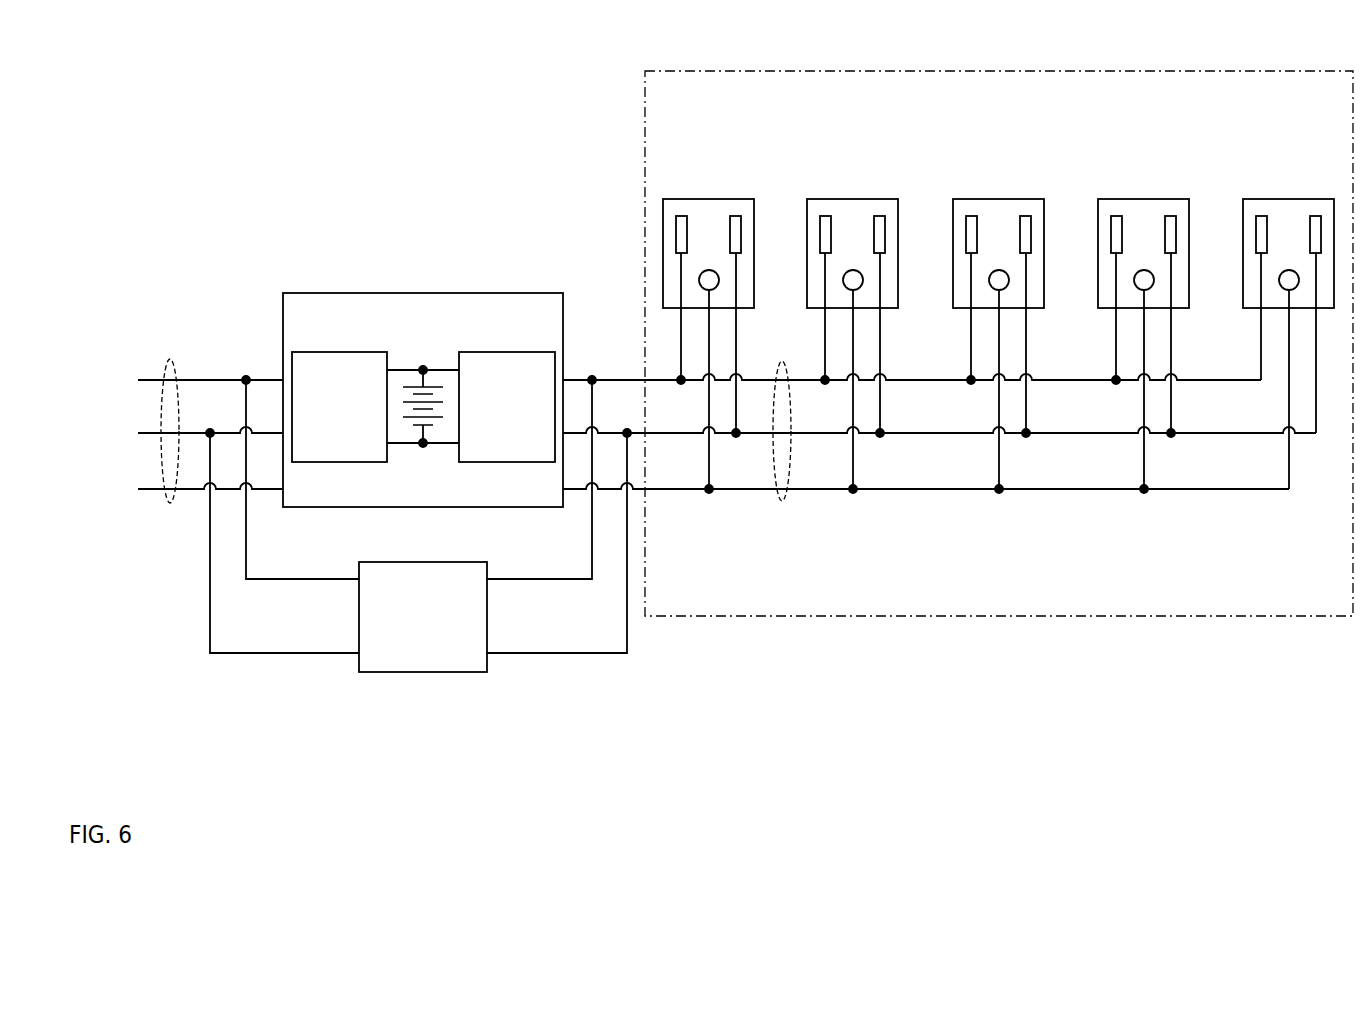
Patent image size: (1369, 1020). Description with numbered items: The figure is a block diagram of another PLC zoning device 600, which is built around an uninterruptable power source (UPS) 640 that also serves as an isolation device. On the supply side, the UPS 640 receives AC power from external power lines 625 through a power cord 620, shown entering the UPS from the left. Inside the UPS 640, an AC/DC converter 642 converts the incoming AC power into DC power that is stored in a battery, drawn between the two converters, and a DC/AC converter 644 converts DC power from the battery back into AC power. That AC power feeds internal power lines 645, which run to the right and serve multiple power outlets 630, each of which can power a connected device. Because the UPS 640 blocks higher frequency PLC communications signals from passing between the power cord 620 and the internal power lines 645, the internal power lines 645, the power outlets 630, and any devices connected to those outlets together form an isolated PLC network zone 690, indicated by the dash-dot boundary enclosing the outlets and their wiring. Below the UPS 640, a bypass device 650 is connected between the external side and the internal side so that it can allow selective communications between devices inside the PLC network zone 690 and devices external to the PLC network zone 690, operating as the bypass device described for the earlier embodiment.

The PLC zoning device 600 is at (150, 119).
The power cord 620 is at (171, 359).
The external power lines 625 is at (101, 362).
The power outlets 630 is at (1010, 198).
The uninterruptable power source (UPS) 640 is at (423, 400).
The AC/DC converter 642 is at (339, 407).
The DC/AC converter 644 is at (507, 407).
The internal power lines 645 is at (779, 500).
The bypass device 650 is at (418, 524).
The PLC network zone 690 is at (958, 343).